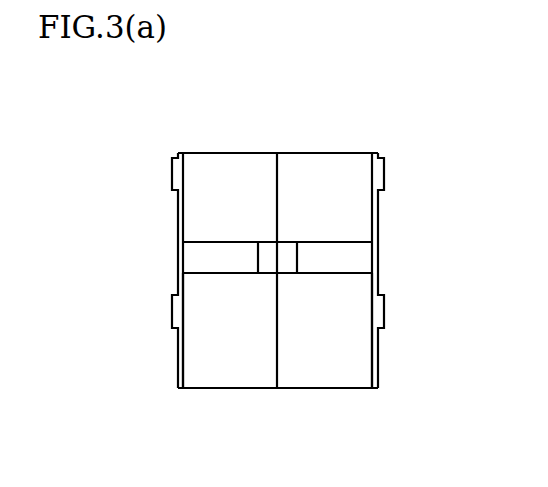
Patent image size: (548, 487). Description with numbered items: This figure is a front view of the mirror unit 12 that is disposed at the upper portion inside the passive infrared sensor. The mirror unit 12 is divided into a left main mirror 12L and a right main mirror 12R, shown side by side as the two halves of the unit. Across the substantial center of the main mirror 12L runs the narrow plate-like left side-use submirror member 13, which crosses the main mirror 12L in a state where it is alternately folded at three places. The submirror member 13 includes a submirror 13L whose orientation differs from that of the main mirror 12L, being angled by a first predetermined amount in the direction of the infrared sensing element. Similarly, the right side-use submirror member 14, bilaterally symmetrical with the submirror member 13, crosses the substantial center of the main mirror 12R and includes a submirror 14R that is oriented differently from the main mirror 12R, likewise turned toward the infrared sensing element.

The mirror unit 12 is at (230, 97).
The main mirror 12L is at (238, 359).
The main mirror 12R is at (318, 359).
The left side-use submirror member 13 is at (213, 242).
The submirror 13L is at (210, 258).
The right side-use submirror member 14 is at (342, 240).
The submirror 14R is at (345, 258).